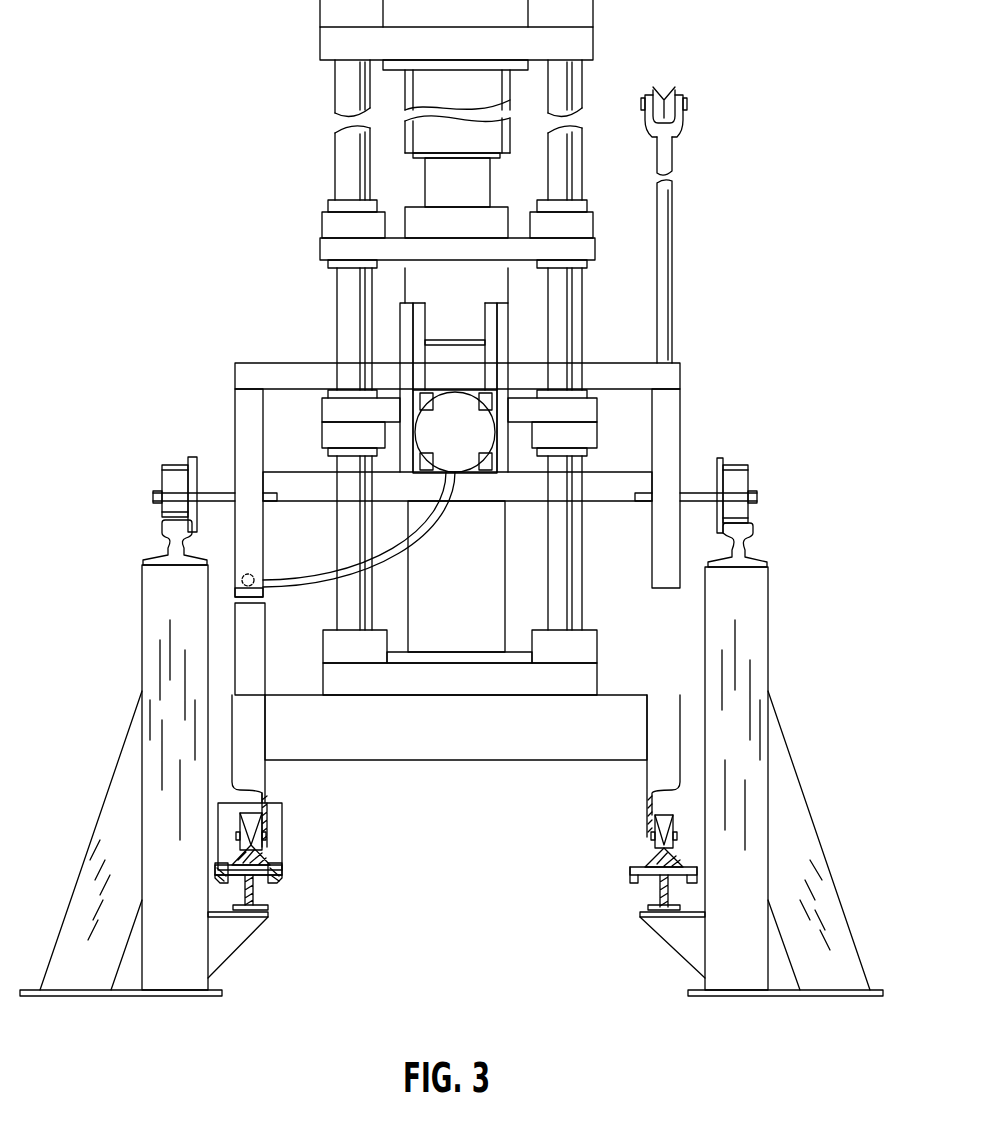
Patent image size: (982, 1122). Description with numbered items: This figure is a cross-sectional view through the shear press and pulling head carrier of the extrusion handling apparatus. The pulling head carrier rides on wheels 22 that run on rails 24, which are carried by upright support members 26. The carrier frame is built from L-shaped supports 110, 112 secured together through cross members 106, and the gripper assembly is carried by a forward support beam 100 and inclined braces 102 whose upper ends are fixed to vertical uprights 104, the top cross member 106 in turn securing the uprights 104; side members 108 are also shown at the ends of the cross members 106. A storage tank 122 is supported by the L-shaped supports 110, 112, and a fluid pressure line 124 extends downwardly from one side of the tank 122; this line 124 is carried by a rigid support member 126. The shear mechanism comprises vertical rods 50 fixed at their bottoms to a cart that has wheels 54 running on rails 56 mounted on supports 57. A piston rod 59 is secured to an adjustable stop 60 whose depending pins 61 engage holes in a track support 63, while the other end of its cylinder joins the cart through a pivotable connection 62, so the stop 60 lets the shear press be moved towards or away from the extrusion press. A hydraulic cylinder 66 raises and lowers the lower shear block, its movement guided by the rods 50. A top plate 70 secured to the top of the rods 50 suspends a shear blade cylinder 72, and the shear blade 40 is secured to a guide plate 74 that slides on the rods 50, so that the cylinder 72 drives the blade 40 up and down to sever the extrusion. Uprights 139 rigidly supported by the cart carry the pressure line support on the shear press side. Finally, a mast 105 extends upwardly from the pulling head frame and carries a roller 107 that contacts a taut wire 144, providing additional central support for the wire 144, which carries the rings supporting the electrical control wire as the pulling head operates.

The wheels 22 is at (170, 478).
The rails 24 is at (168, 534).
The upright support members 26 is at (152, 618).
The shear blade 40 is at (490, 216).
The vertical rods 50 is at (340, 77).
The wheels 54 is at (671, 818).
The rails 56 is at (262, 877).
The supports 57 is at (237, 937).
The piston rod 59 is at (467, 739).
The adjustable stop 60 is at (276, 812).
The depending pins 61 is at (220, 876).
The pivotable connection 62 is at (467, 690).
The track support 63 is at (283, 875).
The hydraulic cylinder 66 is at (467, 604).
The top plate 70 is at (578, 45).
The shear blade cylinder 72 is at (467, 95).
The guide plate 74 is at (583, 247).
The forward support beam 100 is at (595, 493).
The inclined braces 102 is at (490, 333).
The vertical uprights 104 is at (405, 318).
The mast 105 is at (666, 213).
The cross members 106 is at (620, 373).
The roller 107 is at (673, 96).
The side post 108 is at (246, 408).
The L-shaped supports 110 is at (418, 393).
The L-shaped supports 112 is at (420, 470).
The storage tank 122 is at (482, 428).
The fluid pressure line 124 is at (311, 578).
The rigid support member 126 is at (256, 592).
The uprights 139 is at (257, 663).
The taut wire 144 is at (664, 92).